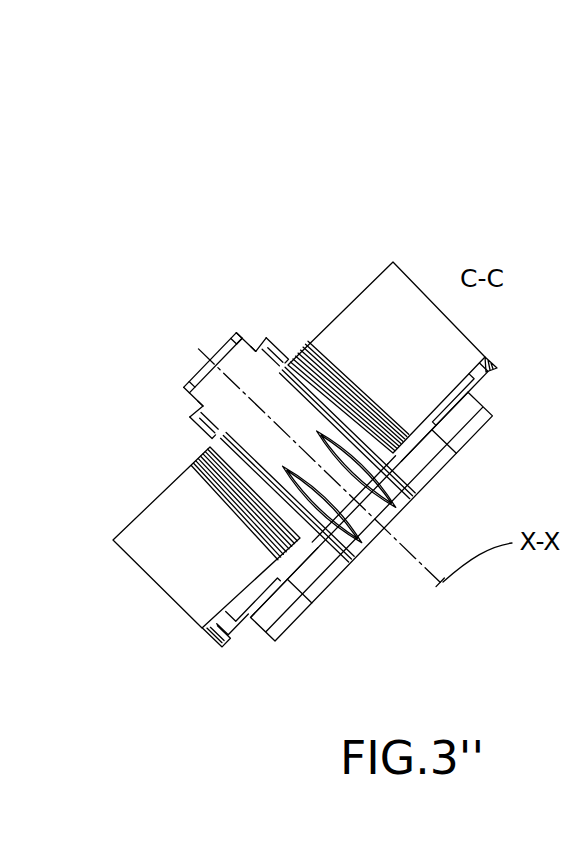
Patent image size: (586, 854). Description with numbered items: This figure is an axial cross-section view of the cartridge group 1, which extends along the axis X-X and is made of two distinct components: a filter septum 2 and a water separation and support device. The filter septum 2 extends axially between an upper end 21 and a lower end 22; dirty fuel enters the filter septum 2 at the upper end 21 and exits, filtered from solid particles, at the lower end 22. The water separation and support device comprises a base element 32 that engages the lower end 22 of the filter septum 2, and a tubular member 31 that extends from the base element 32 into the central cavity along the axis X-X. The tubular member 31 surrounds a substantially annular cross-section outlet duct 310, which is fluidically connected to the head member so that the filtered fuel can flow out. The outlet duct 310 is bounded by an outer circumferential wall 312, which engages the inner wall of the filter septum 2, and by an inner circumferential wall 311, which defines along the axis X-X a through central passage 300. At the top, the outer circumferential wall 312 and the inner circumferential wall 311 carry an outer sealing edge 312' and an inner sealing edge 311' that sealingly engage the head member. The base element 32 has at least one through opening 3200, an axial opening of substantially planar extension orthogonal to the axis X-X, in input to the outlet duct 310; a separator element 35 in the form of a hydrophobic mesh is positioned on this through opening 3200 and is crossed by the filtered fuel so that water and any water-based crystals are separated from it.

The cartridge group 1 is at (278, 147).
The filter septum 2 is at (107, 476).
The upper end 21 is at (120, 531).
The lower end 22 is at (206, 632).
The through central passage 300 is at (214, 388).
The tubular member 31 is at (156, 406).
The outlet duct 310 is at (244, 462).
The inner circumferential wall 311 is at (237, 319).
The inner sealing edge 311' is at (197, 292).
The outer circumferential wall 312 is at (392, 324).
The outer sealing edge 312' is at (270, 307).
The base element 32 is at (246, 658).
The through opening 3200 is at (298, 602).
The separator element 35 is at (320, 560).